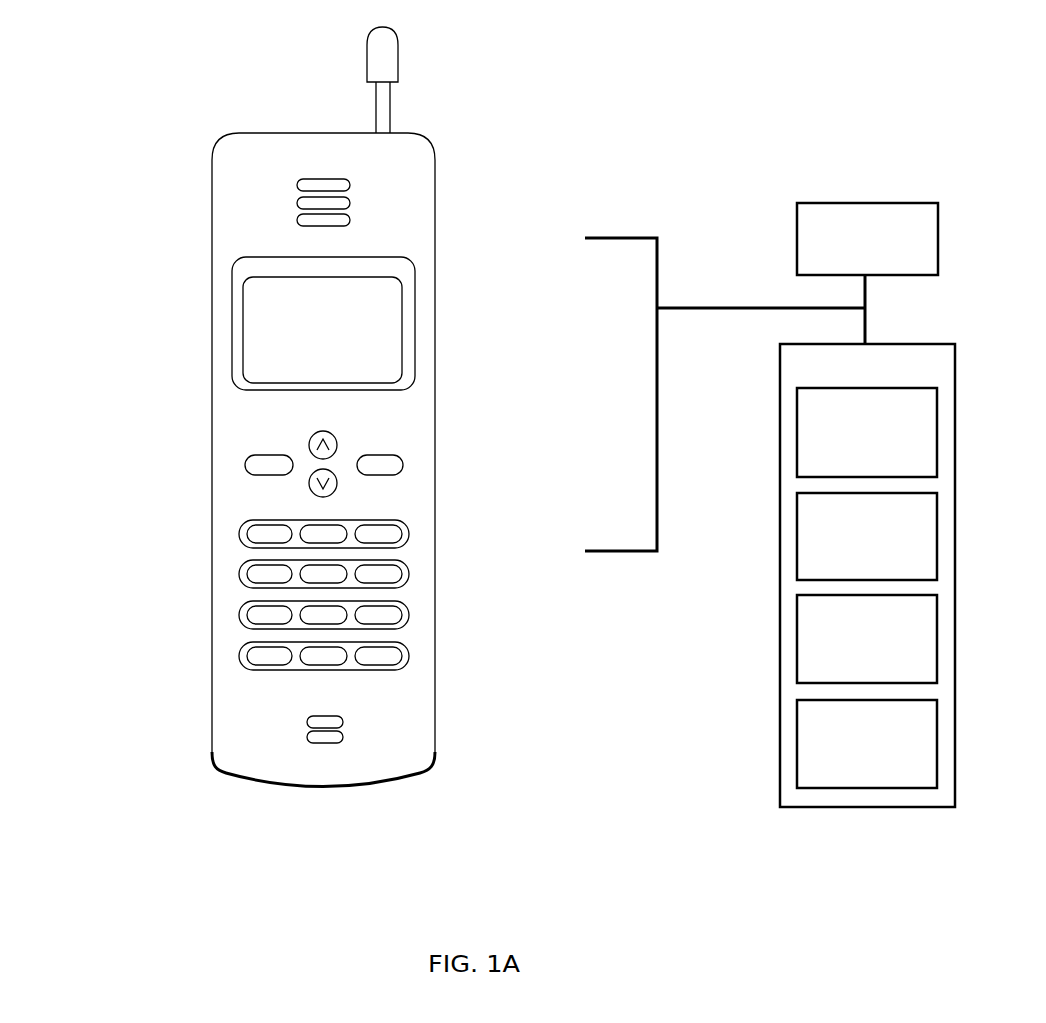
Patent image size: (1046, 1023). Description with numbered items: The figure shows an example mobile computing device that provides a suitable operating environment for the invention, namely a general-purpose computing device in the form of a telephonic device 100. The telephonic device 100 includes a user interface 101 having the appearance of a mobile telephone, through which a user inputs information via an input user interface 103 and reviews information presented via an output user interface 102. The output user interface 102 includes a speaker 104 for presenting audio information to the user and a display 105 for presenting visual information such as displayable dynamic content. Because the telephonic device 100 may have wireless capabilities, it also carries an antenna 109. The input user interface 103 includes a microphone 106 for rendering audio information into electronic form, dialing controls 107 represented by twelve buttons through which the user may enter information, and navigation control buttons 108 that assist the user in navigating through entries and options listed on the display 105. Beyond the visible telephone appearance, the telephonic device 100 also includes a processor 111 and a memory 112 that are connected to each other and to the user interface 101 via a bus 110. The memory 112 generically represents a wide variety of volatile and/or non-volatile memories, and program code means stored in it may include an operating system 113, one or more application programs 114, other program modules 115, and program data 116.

The telephonic device 100 is at (700, 108).
The user interface 101 is at (212, 797).
The output user interface 102 is at (447, 387).
The input user interface 103 is at (447, 692).
The speaker 104 is at (203, 202).
The display 105 is at (203, 333).
The microphone 106 is at (203, 727).
The dialing controls 107 is at (203, 672).
The navigation control buttons 108 is at (203, 457).
The antenna 109 is at (419, 91).
The bus 110 is at (693, 307).
The processor 111 is at (853, 262).
The memory 112 is at (920, 376).
The operating system 113 is at (852, 466).
The application programs 114 is at (852, 569).
The program modules 115 is at (852, 676).
The program data 116 is at (852, 779).